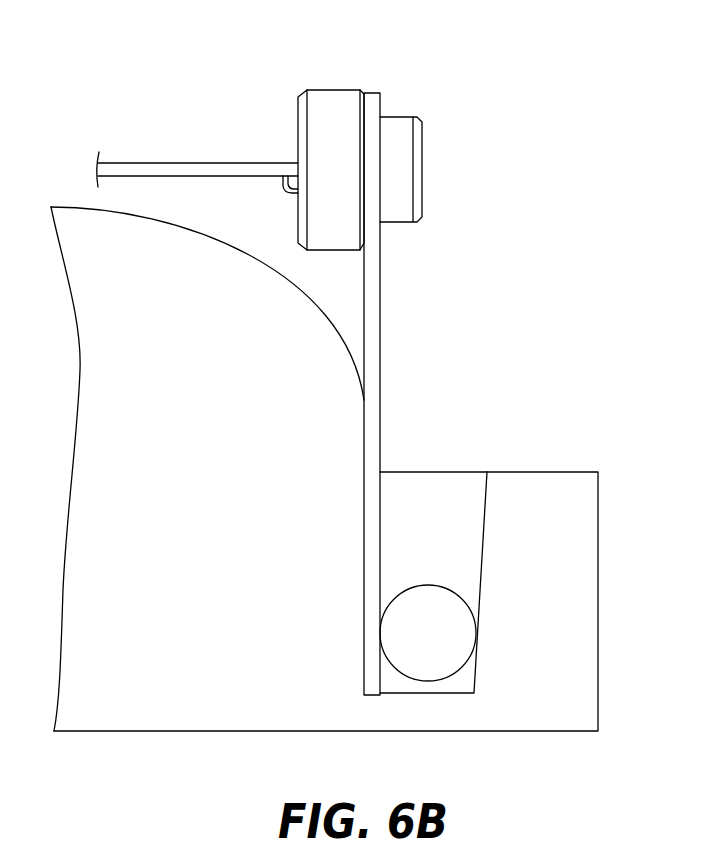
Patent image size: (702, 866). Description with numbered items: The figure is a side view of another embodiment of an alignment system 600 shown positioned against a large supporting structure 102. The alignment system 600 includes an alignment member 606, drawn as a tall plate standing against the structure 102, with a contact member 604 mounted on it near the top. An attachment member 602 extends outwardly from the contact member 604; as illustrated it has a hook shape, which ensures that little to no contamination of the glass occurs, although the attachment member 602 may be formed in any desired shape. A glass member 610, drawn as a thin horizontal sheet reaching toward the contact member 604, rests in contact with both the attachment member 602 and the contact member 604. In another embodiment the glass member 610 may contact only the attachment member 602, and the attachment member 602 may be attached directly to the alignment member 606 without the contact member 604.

The vehicle body / structure 102 is at (263, 481).
The alignment system 600 is at (384, 82).
The attachment member 602 is at (283, 185).
The contact member 604 is at (318, 89).
The alignment member 606 is at (380, 350).
The glass member 610 is at (215, 162).